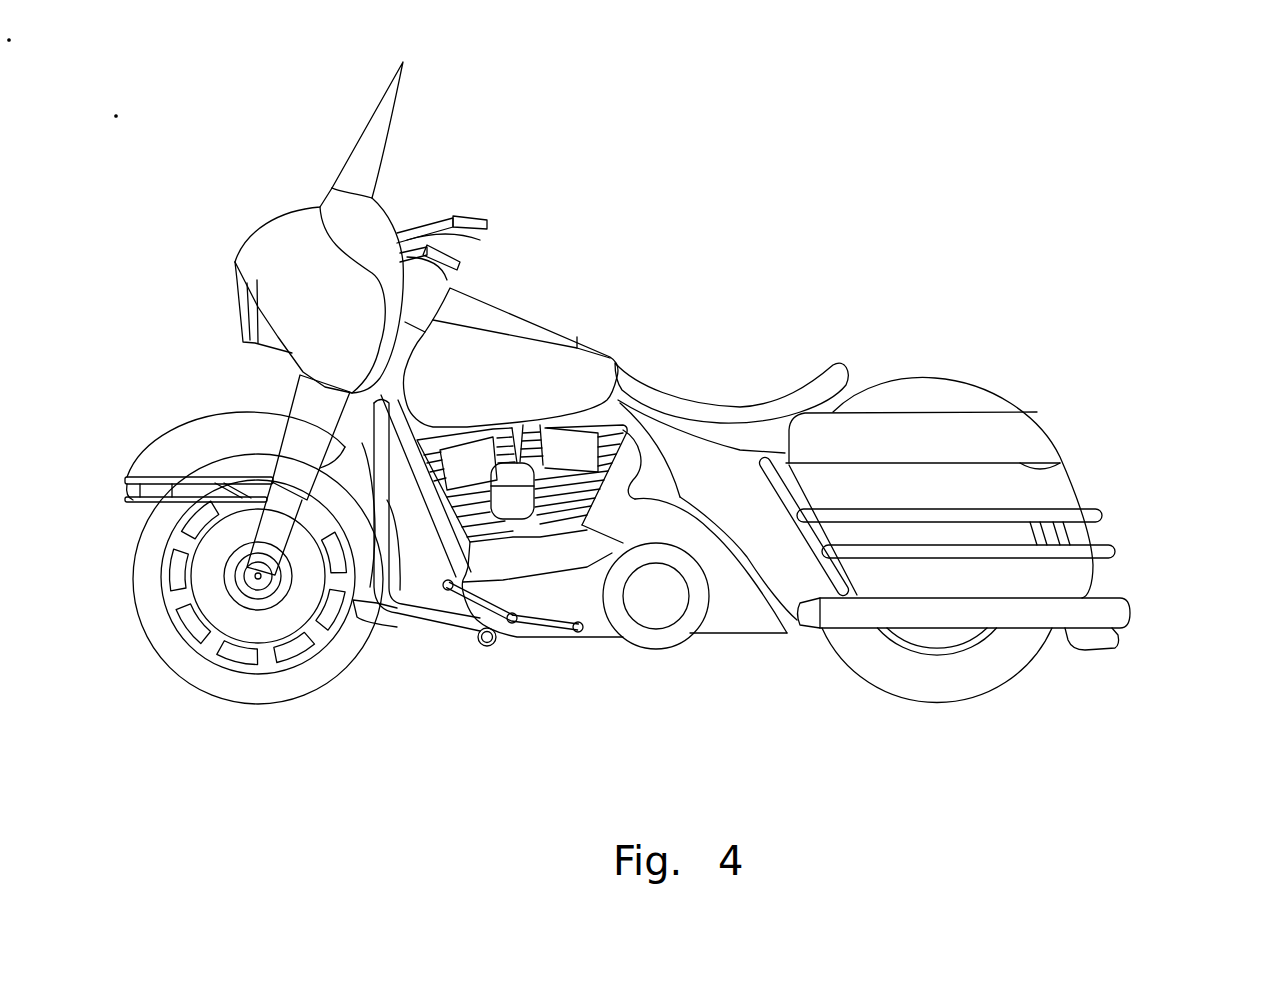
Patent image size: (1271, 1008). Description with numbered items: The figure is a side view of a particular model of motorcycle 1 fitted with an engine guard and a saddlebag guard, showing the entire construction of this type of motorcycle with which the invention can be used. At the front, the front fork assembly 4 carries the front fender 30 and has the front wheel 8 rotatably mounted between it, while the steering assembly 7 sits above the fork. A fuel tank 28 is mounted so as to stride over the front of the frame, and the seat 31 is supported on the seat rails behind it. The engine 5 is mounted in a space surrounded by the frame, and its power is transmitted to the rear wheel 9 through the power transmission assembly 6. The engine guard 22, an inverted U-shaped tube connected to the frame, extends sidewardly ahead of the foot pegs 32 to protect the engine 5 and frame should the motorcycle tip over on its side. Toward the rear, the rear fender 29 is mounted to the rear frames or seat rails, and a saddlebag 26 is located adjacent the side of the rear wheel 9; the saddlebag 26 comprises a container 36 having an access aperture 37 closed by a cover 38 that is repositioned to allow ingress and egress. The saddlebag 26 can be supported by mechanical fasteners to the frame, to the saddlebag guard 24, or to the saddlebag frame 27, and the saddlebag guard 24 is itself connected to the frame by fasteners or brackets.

The motorcycle 1 is at (578, 760).
The front fork assembly 4 is at (312, 420).
The engine 5 is at (546, 463).
The power transmission assembly 6 is at (582, 603).
The steering assembly 7 is at (422, 223).
The front wheel 8 is at (318, 670).
The rear wheel 9 is at (983, 668).
The engine guard 22 is at (427, 617).
The saddlebag guard 24 is at (807, 573).
The saddlebag 26 is at (1053, 497).
The saddlebag frame 27 is at (1113, 552).
The fuel tank 28 is at (487, 347).
The rear fender 29 is at (1097, 640).
The front fender 30 is at (212, 448).
The seat 31 is at (720, 413).
The foot pegs 32 is at (490, 647).
The container 36 is at (950, 490).
The access aperture 37 is at (1068, 468).
The cover 38 is at (937, 437).